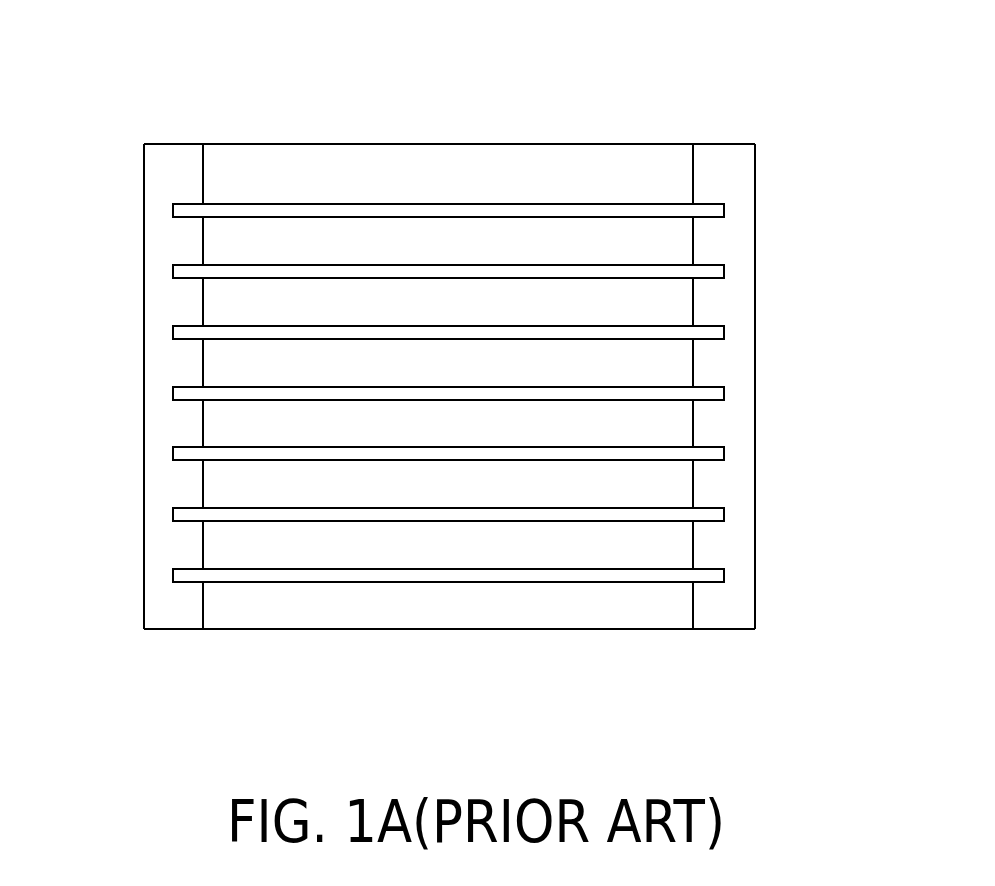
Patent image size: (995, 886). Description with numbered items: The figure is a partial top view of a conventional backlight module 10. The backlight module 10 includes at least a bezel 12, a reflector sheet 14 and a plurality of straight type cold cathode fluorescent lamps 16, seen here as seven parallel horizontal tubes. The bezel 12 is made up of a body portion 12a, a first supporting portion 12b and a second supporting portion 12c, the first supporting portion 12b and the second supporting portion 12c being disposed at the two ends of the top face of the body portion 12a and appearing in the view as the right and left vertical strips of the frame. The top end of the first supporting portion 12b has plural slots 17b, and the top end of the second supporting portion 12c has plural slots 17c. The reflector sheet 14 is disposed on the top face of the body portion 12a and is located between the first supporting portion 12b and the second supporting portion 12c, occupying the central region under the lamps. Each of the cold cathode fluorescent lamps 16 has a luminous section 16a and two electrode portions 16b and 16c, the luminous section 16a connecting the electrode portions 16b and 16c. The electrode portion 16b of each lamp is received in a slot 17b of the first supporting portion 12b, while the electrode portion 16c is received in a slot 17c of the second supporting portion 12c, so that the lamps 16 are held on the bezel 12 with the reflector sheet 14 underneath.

The backlight module 10 is at (458, 363).
The bezel 12 is at (515, 370).
The body portion 12a is at (276, 629).
The first supporting portion 12b is at (741, 155).
The second supporting portion 12c is at (163, 155).
The reflector sheet 14 is at (374, 155).
The straight type cold cathode fluorescent lamps 16 is at (443, 292).
The luminous section 16a is at (298, 212).
The electrode portion 16b is at (708, 205).
The electrode portion 16c is at (188, 206).
The slots 17b is at (727, 203).
The slots 17c is at (171, 210).